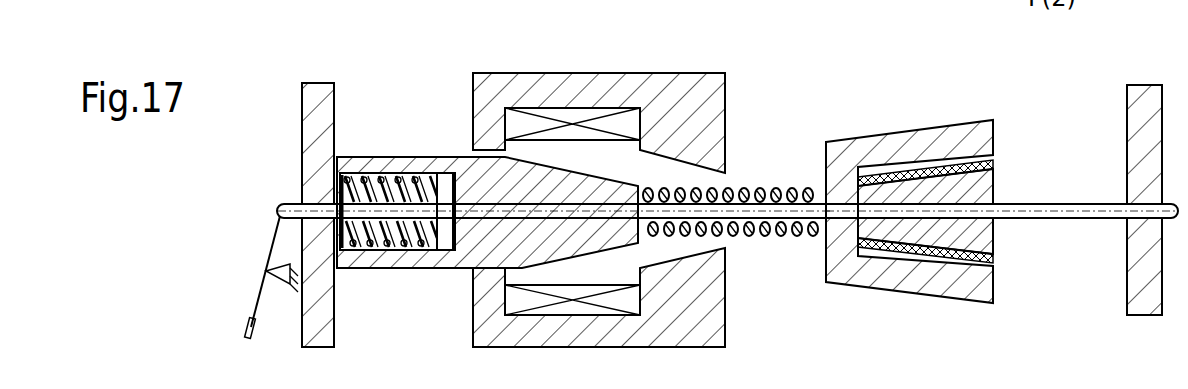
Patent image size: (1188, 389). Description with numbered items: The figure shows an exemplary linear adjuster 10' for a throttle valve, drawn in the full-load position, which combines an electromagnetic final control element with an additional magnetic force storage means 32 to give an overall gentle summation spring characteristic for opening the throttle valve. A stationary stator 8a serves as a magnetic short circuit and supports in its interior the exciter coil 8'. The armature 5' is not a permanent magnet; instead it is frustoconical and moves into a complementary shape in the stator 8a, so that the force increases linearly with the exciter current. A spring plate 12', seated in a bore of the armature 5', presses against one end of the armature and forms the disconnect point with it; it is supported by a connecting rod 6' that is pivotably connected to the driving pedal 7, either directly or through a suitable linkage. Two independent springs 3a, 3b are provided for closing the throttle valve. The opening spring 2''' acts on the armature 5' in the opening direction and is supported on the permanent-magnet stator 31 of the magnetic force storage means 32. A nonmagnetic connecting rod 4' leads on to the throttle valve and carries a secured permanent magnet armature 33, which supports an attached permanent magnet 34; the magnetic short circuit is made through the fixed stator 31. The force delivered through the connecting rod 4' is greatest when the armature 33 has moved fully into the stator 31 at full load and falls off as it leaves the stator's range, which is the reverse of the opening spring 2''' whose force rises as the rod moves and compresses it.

The linear adjuster 10' is at (612, 189).
The exciter coil 8' is at (581, 309).
The stator 8a is at (677, 328).
The armature 5' is at (487, 263).
The spring 3a is at (355, 172).
The spring 3b is at (392, 183).
The spring plate 12' is at (446, 153).
The connecting rod 6' is at (553, 287).
The driving pedal 7 is at (260, 304).
The opening spring 2''' is at (730, 147).
The magnetic force storage means 32 is at (952, 177).
The permanent-magnet stator 31 is at (973, 285).
The permanent magnet armature 33 is at (977, 241).
The permanent magnet 34 is at (993, 258).
The connecting rod 4' is at (1002, 140).